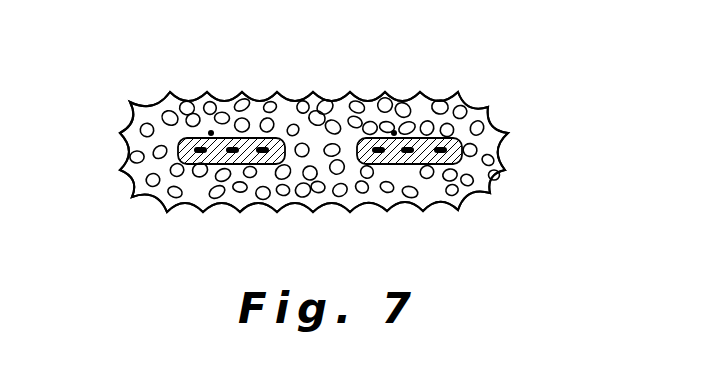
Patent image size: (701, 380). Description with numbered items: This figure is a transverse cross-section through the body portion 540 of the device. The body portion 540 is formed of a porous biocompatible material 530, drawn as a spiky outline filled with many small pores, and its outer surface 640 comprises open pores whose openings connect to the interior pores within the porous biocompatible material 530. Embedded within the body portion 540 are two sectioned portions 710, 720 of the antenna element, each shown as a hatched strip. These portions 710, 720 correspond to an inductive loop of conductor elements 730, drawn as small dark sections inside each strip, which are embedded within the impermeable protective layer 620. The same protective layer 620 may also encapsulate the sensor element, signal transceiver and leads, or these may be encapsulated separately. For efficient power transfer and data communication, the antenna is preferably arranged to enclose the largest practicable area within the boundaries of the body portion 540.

The body portion 540 is at (129, 110).
The porous biocompatible material 530 is at (462, 93).
The outer surface 640 is at (470, 197).
The impermeable protective layer 620 is at (253, 138).
The conductor elements 730 is at (228, 152).
The portion of the antenna element 710 is at (211, 133).
The portion of the antenna element 720 is at (394, 133).